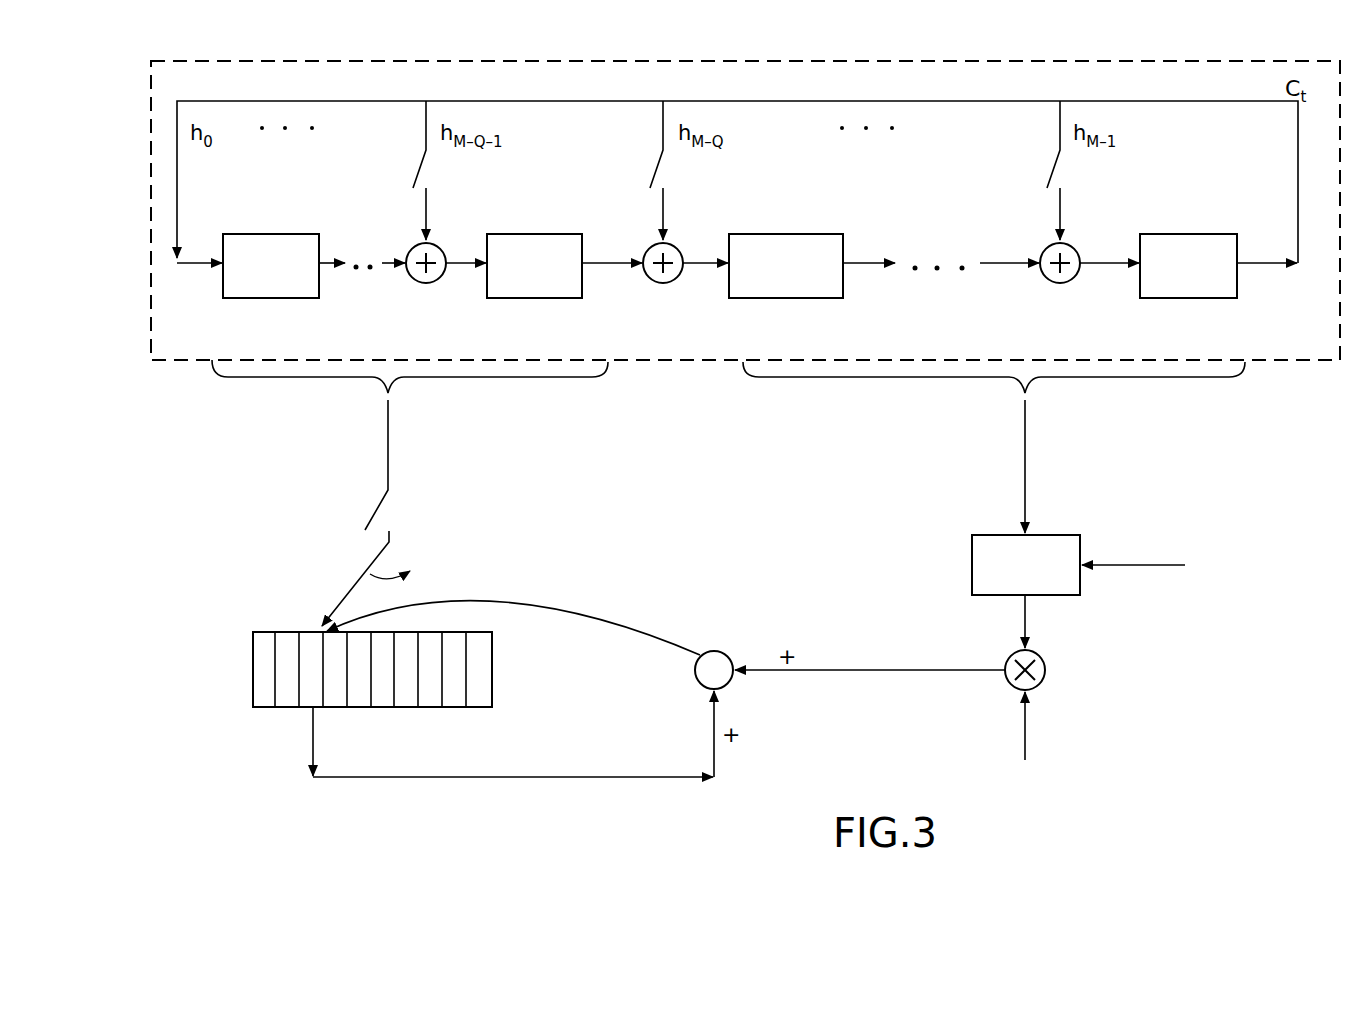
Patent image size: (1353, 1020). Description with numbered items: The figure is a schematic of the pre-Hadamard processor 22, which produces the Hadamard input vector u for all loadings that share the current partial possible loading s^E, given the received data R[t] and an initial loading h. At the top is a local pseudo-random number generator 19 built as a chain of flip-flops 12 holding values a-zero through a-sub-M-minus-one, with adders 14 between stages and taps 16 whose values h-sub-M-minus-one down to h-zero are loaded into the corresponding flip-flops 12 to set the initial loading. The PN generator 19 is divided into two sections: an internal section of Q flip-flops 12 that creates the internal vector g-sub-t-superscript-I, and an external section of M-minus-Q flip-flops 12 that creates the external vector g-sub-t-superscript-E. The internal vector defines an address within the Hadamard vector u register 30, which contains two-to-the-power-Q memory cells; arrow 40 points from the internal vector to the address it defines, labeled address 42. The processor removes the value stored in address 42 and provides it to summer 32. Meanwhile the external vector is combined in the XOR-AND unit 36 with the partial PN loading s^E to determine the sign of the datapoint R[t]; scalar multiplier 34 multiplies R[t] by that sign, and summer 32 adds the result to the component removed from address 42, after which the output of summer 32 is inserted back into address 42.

The flip-flop 12 is at (285, 298).
The adder 14 is at (436, 283).
The tap 16 is at (418, 178).
The PN generator 19 is at (150, 220).
The pre-Hadamard processor 22 is at (212, 525).
The Hadamard vector u register 30 is at (253, 683).
The summer 32 is at (722, 651).
The scalar multiplier 34 is at (1045, 668).
The XOR-AND unit 36 is at (1057, 535).
The arrow 40 is at (345, 598).
The address 42 is at (310, 686).